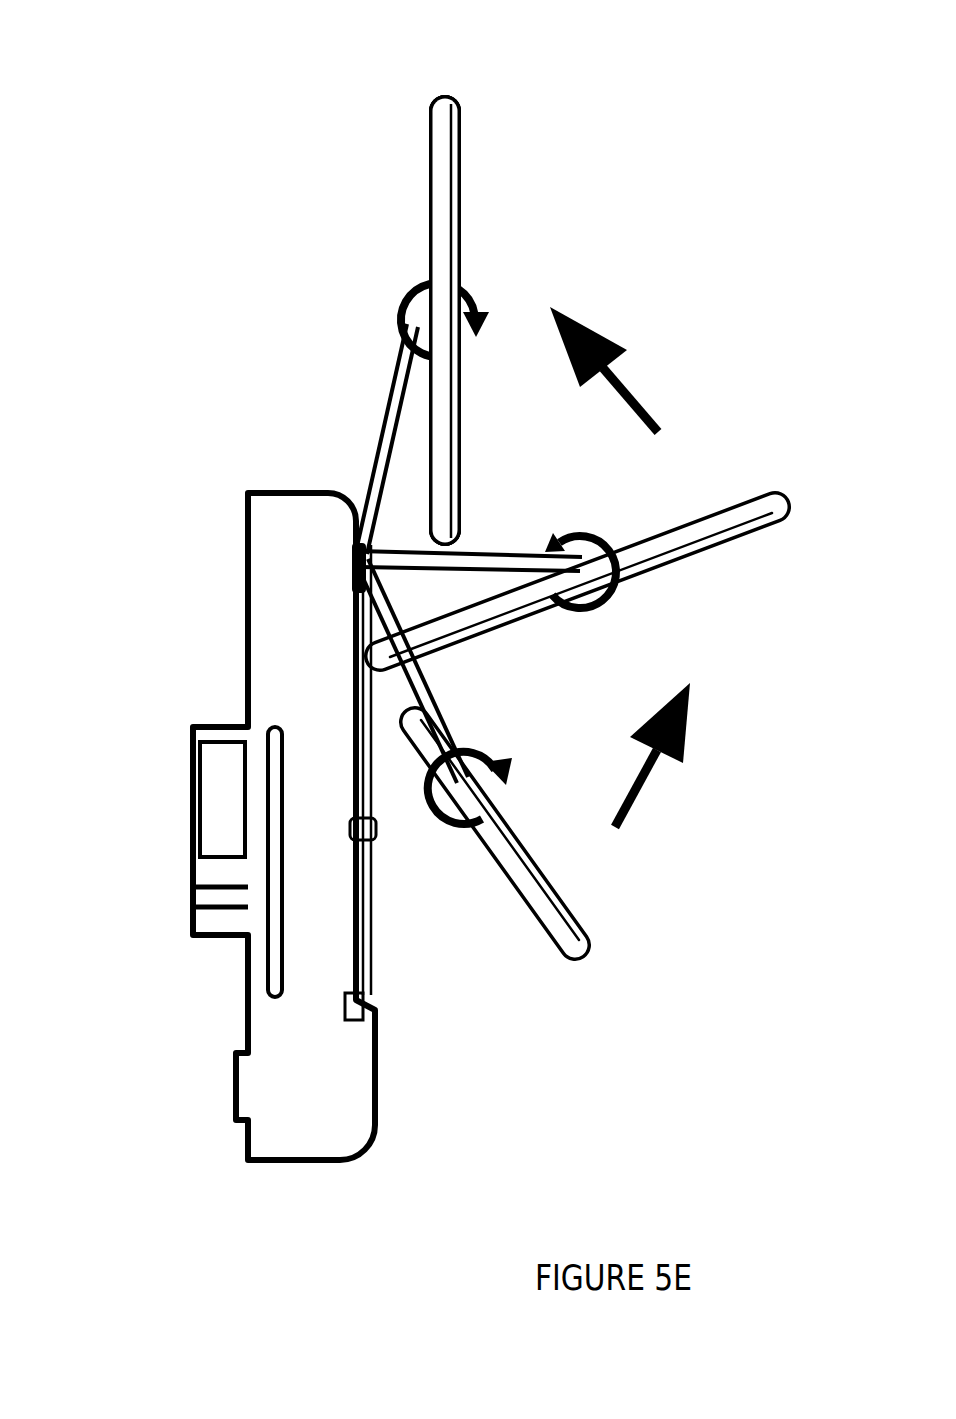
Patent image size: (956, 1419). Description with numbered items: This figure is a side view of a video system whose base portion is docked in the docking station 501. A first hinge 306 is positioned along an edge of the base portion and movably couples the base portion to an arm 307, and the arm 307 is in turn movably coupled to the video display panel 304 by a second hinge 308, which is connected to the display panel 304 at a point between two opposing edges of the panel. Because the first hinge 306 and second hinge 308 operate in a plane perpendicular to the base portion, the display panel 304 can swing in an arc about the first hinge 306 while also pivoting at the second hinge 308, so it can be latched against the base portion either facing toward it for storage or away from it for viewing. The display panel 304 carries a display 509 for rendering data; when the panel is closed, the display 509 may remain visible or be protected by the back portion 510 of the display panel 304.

The video display panel 304 is at (384, 270).
The first hinge 306 is at (244, 576).
The arm 307 is at (329, 439).
The second hinge 308 is at (381, 285).
The docking station 501 is at (234, 748).
The display 509 is at (555, 321).
The back portion 510 is at (356, 321).